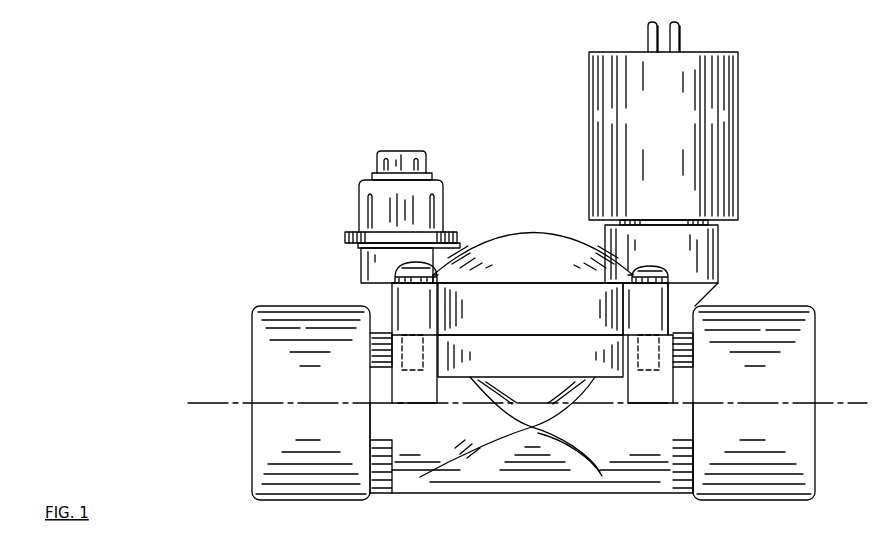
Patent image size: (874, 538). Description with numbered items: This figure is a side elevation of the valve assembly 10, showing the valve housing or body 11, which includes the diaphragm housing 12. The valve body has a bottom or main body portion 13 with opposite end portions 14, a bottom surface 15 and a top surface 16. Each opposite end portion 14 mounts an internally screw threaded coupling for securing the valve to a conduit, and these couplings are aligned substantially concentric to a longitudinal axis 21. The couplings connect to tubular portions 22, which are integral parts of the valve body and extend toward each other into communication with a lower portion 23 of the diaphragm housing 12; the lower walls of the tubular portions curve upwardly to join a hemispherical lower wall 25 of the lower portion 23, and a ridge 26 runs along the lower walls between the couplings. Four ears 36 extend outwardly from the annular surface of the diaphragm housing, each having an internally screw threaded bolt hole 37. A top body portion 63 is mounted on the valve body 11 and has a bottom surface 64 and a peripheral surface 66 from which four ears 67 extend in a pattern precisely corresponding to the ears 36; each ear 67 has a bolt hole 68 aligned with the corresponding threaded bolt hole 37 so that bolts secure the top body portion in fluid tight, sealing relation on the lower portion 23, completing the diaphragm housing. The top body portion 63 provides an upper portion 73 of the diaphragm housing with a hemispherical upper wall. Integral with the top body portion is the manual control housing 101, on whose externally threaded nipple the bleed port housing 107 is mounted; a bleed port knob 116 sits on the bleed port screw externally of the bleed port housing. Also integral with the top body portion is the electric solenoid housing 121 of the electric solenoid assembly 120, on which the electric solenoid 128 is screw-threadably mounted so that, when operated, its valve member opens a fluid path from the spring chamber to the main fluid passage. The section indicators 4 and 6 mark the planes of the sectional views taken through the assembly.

The valve assembly 10 is at (772, 226).
The valve housing or body 11 is at (652, 492).
The diaphragm housing 12 is at (508, 232).
The bottom or main body portion 13 is at (416, 470).
The opposite end portions 14 is at (252, 442).
The bottom surface 15 is at (512, 493).
The top surface 16 is at (578, 335).
The longitudinal axis 21 is at (230, 402).
The tubular portions 22 is at (485, 465).
The lower portion 23 is at (472, 375).
The hemispherical lower wall 25 is at (565, 440).
The ridge 26 is at (448, 493).
The ears 36 is at (418, 385).
The internally screw threaded bolt hole 37 is at (380, 352).
The section line 4 is at (317, 333).
The section line 6 is at (533, 533).
The top body portion 63 is at (727, 247).
The bottom surface 64 is at (668, 342).
The peripheral surface 66 is at (530, 330).
The ears 67 is at (530, 309).
The bolt hole 68 is at (395, 296).
The upper portion 73 is at (492, 240).
The manual control housing 101 is at (368, 258).
The bleed port housing 107 is at (437, 178).
The bleed port knob 116 is at (405, 150).
The electric solenoid assembly 120 is at (738, 126).
The electric solenoid housing 121 is at (661, 265).
The electric solenoid 128 is at (662, 83).